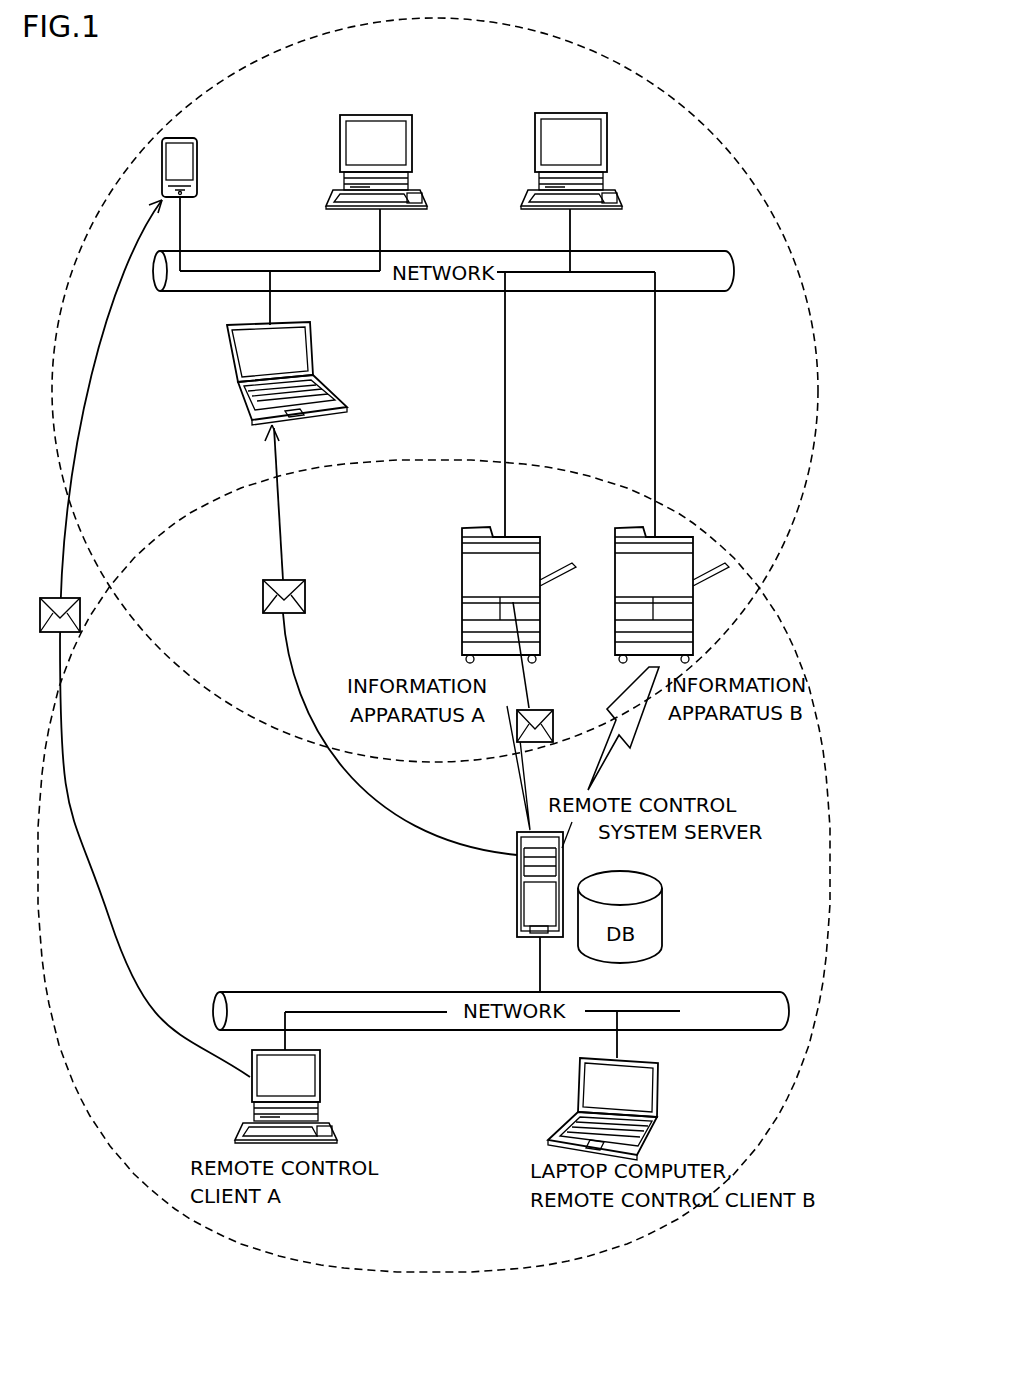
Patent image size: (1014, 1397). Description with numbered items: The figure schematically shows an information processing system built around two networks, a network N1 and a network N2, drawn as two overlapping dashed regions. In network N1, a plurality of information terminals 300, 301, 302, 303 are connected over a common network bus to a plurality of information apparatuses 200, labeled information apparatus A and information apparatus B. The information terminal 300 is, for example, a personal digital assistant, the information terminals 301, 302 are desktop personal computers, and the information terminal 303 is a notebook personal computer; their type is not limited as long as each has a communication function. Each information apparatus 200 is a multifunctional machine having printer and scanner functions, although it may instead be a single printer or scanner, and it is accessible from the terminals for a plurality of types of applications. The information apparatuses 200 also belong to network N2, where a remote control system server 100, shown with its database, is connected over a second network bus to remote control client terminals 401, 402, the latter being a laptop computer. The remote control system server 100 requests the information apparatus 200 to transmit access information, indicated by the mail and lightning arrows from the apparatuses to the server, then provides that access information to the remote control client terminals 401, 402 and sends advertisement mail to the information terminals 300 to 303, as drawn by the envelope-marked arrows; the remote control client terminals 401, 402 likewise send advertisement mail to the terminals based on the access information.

The remote control system server 100 is at (517, 903).
The information apparatus 200 is at (462, 612).
The information terminal 300 is at (198, 160).
The information terminal 301 is at (413, 130).
The information terminal 302 is at (608, 130).
The information terminal 303 is at (238, 408).
The remote control client terminal 401 is at (322, 1066).
The remote control client terminal 402 is at (660, 1082).
The network N1 is at (733, 151).
The network N2 is at (132, 1178).